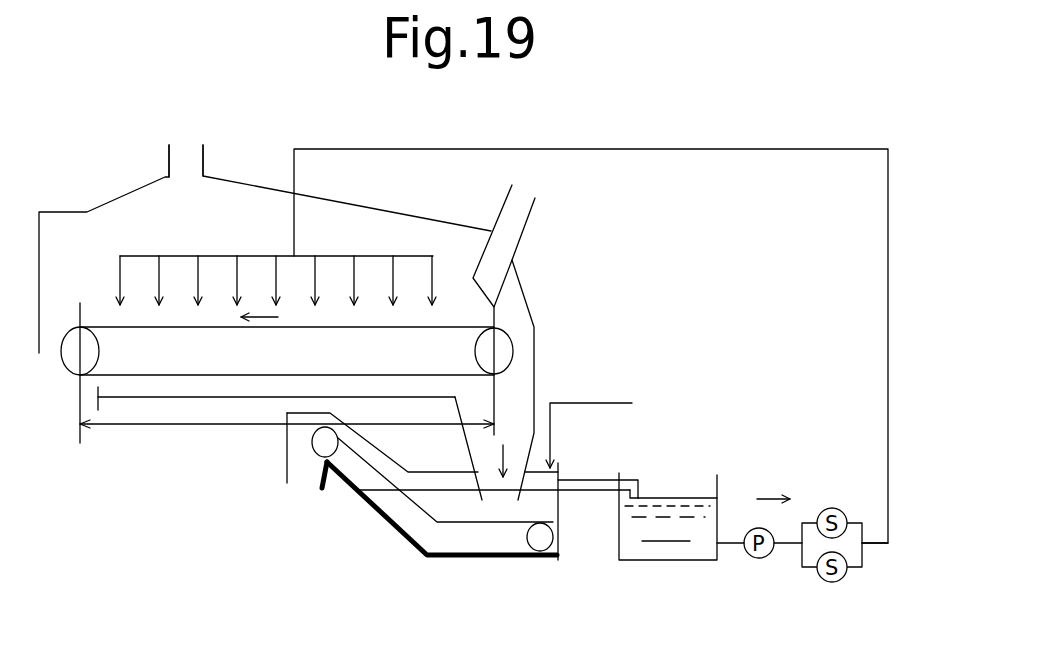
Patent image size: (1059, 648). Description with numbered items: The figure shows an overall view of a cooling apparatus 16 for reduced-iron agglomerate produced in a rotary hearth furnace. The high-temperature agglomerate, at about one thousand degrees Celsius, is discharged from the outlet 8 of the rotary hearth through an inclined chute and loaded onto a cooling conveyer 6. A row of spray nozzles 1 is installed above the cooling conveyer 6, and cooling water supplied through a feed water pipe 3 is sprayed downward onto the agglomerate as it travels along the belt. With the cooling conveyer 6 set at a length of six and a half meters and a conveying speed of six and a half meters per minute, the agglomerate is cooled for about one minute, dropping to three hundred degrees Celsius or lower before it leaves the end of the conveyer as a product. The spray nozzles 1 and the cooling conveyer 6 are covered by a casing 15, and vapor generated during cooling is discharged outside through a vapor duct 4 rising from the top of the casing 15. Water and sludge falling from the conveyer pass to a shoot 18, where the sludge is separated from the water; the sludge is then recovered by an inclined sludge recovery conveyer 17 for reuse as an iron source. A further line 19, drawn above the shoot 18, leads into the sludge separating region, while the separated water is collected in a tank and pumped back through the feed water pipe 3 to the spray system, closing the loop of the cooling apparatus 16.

The spray nozzles 1 is at (229, 256).
The feed water pipe 3 is at (482, 149).
The vapor duct 4 is at (188, 153).
The cooling conveyer 6 is at (157, 367).
The outlet 8 is at (520, 232).
The casing 15 is at (153, 178).
The cooling apparatus 16 is at (274, 155).
The sludge recovery conveyer 17 is at (355, 478).
The shoot 18 is at (522, 438).
The supply pipe 19 is at (578, 400).